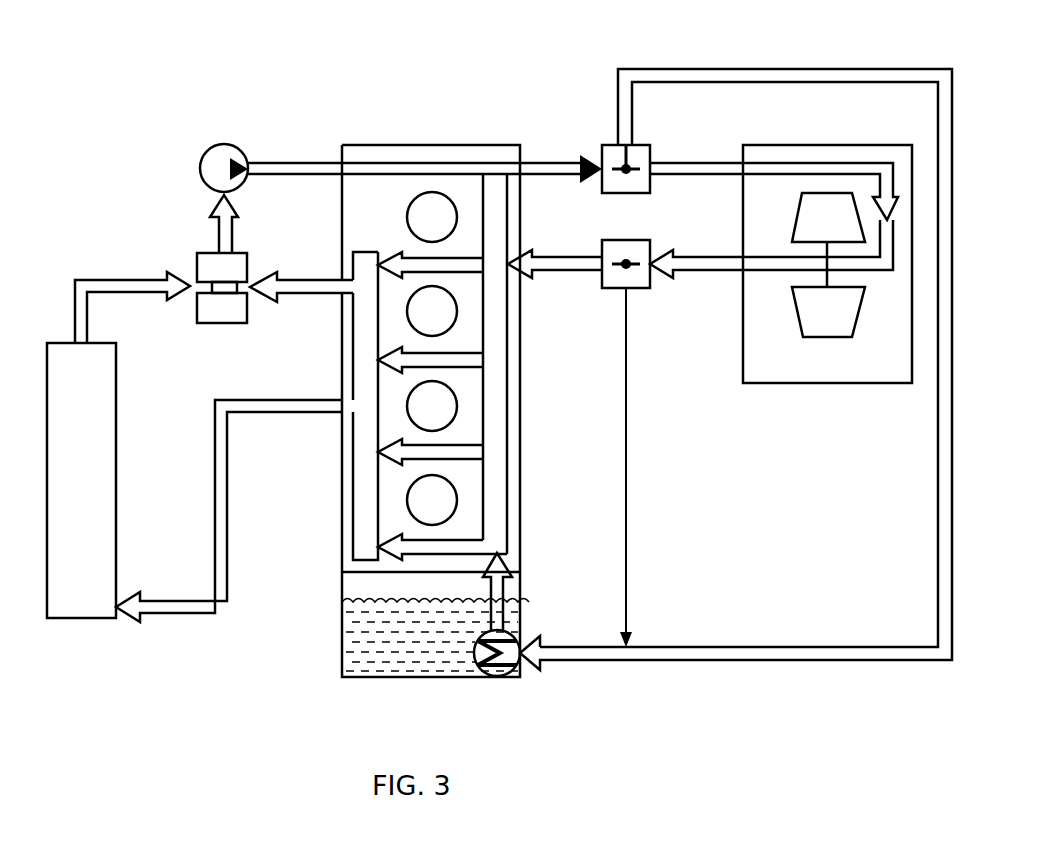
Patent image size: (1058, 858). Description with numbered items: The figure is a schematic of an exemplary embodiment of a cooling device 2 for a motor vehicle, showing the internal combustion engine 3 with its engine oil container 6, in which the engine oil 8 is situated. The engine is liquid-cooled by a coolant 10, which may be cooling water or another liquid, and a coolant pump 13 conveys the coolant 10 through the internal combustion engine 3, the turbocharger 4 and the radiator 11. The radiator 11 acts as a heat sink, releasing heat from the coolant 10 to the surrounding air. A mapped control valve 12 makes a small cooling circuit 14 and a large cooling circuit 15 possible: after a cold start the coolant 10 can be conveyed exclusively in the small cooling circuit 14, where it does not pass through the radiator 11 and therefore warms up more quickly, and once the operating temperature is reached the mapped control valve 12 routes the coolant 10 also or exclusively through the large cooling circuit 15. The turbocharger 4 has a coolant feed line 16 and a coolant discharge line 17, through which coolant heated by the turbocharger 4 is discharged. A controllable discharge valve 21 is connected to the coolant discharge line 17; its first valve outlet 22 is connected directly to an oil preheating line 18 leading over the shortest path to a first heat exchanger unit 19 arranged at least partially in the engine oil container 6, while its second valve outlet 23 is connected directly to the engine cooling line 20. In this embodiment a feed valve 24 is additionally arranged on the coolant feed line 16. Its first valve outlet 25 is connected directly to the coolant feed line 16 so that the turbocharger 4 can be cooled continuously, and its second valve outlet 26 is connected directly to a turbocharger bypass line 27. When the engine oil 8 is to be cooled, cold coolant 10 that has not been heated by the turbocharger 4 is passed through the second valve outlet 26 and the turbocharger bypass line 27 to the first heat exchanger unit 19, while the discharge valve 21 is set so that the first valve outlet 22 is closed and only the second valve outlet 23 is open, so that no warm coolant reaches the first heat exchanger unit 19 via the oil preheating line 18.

The cooling device 2 is at (664, 684).
The internal combustion engine 3 is at (410, 140).
The turbocharger 4 is at (866, 392).
The engine oil container 6 is at (342, 596).
The engine oil 8 is at (342, 654).
The coolant 10 is at (292, 156).
The radiator 11 is at (98, 505).
The mapped control valve 12 is at (225, 325).
The coolant pump 13 is at (212, 150).
The small cooling circuit 14 is at (310, 280).
The large cooling circuit 15 is at (120, 280).
The coolant feed line 16 is at (698, 163).
The coolant discharge line 17 is at (700, 274).
The oil preheating line 18 is at (628, 470).
The first heat exchanger unit 19 is at (468, 665).
The engine cooling line 20 is at (572, 257).
The discharge valve 21 is at (612, 290).
The first valve outlet 22 is at (636, 290).
The second valve outlet 23 is at (600, 276).
The feed valve 24 is at (612, 143).
The first valve outlet 25 is at (656, 178).
The second valve outlet 26 is at (636, 143).
The turbocharger bypass line 27 is at (781, 68).